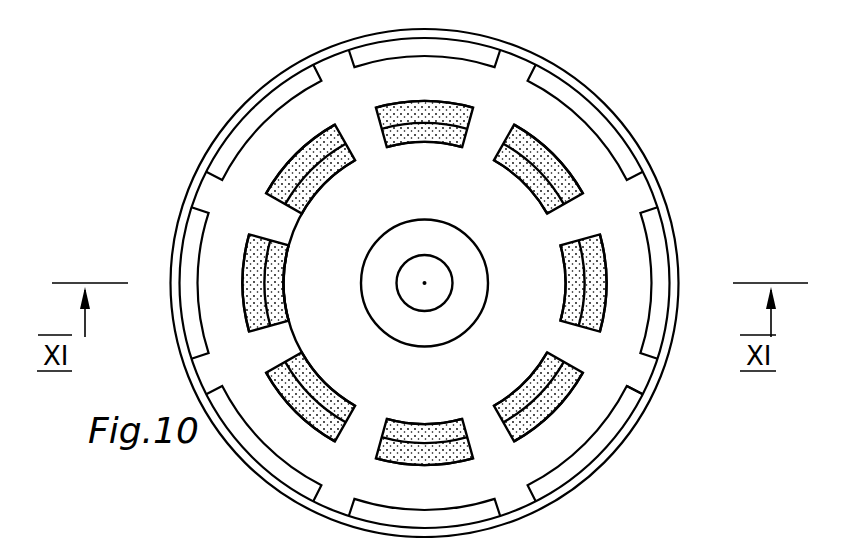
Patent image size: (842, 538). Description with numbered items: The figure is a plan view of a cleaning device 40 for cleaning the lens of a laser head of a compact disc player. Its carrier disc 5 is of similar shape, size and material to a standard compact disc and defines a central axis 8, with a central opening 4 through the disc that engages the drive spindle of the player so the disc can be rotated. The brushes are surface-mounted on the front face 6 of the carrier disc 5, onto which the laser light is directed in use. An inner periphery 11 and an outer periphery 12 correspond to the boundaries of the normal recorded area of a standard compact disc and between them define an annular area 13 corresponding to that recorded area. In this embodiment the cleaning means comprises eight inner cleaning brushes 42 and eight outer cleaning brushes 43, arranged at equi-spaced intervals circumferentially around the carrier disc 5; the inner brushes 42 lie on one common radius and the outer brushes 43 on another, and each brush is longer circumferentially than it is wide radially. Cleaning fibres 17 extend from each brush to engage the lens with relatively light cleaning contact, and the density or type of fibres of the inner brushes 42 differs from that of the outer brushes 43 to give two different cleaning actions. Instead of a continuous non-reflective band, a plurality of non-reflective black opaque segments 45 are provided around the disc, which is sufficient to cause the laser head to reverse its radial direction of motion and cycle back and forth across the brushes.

The opening 4 is at (423, 312).
The carrier disc 5 is at (633, 190).
The front face 6 is at (356, 82).
The central axis 8 is at (424, 283).
The inner periphery 11 is at (488, 272).
The outer periphery 12 is at (667, 345).
The annular area 13 is at (630, 365).
The cleaning fibres 17 is at (393, 113).
The cleaning device 40 is at (612, 70).
The inner cleaning brushes 42 is at (445, 107).
The outer cleaning brushes 43 is at (428, 123).
The non-reflective black opaque segments 45 is at (462, 48).